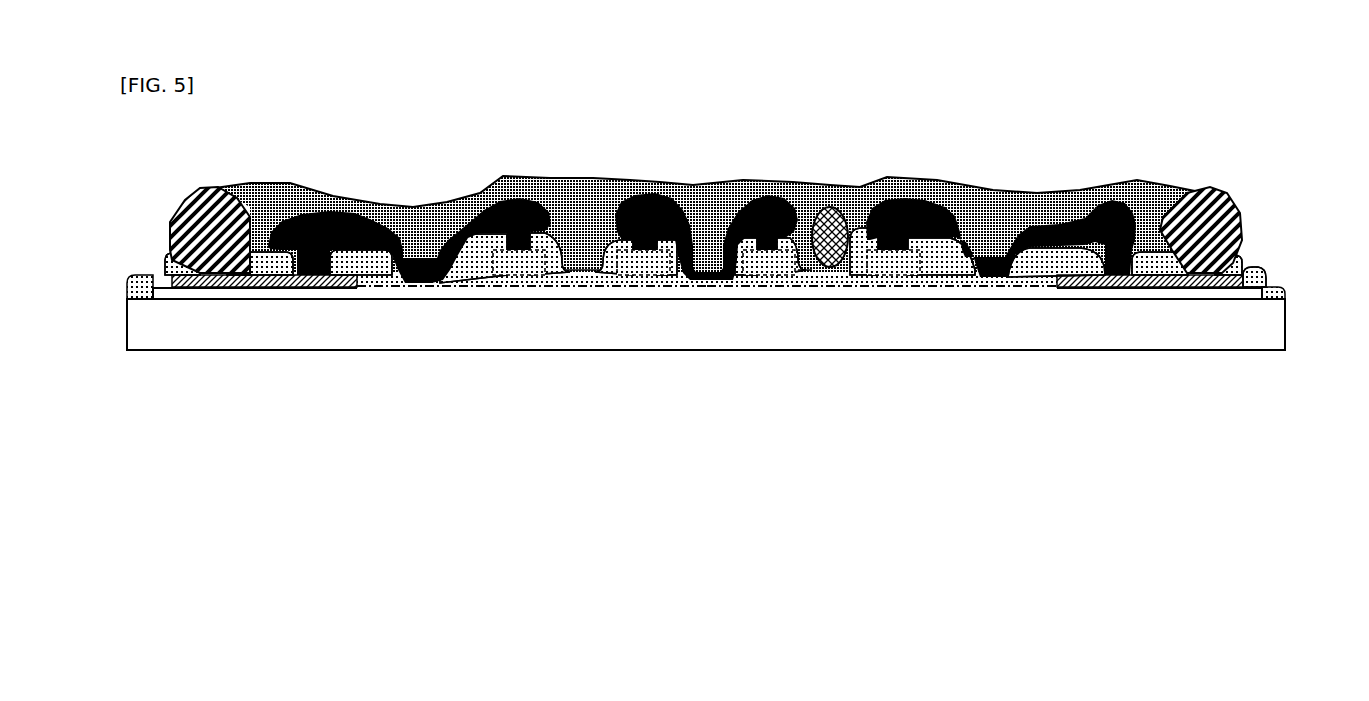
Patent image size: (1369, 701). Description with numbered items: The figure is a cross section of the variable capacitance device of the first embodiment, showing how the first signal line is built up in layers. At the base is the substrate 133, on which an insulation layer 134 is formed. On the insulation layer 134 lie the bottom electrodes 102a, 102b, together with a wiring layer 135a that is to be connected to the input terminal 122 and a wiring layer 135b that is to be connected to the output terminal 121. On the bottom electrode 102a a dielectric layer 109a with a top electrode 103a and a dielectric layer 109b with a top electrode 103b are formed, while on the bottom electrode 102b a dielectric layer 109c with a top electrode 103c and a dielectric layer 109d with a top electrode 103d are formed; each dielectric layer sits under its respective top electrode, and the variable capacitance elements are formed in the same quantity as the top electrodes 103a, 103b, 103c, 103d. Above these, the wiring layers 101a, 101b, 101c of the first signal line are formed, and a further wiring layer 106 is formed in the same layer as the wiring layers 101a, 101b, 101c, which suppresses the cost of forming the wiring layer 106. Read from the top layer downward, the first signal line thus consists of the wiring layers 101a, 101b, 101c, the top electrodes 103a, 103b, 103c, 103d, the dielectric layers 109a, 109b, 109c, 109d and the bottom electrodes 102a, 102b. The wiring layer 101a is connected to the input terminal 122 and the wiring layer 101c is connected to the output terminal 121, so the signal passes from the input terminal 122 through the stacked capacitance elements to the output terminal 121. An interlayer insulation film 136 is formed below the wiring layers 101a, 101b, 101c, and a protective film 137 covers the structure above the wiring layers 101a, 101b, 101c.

The wiring layer 101a is at (330, 253).
The wiring layer 101b is at (707, 273).
The wiring layer 101c is at (1053, 250).
The bottom electrode 102a is at (660, 278).
The bottom electrode 102b is at (907, 280).
The top electrode 103a is at (518, 280).
The top electrode 103b is at (645, 280).
The top electrode 103c is at (762, 280).
The top electrode 103d is at (917, 282).
The wiring layer 106 is at (831, 206).
The dielectric layer 109a is at (497, 280).
The dielectric layer 109b is at (627, 280).
The dielectric layer 109c is at (783, 280).
The dielectric layer 109d is at (875, 280).
The output terminal 121 is at (1217, 200).
The input terminal 122 is at (198, 198).
The substrate 133 is at (1178, 340).
The insulation layer 134 is at (1260, 288).
The wiring layer 135a is at (163, 275).
The wiring layer 135b is at (1245, 270).
The interlayer insulation film 136 is at (1275, 289).
The protective film 137 is at (1137, 197).